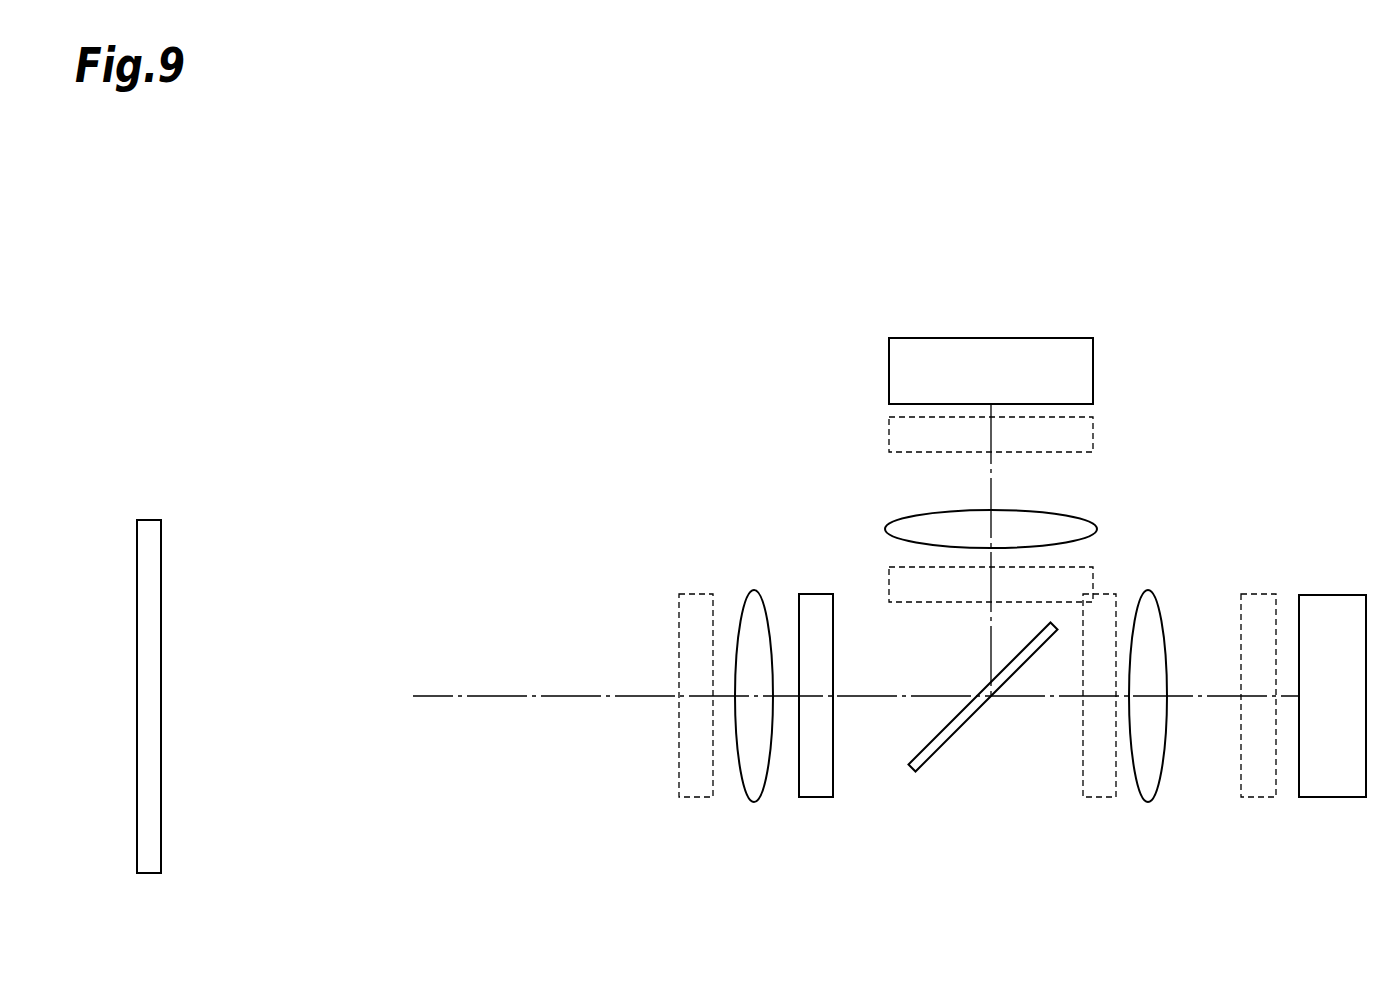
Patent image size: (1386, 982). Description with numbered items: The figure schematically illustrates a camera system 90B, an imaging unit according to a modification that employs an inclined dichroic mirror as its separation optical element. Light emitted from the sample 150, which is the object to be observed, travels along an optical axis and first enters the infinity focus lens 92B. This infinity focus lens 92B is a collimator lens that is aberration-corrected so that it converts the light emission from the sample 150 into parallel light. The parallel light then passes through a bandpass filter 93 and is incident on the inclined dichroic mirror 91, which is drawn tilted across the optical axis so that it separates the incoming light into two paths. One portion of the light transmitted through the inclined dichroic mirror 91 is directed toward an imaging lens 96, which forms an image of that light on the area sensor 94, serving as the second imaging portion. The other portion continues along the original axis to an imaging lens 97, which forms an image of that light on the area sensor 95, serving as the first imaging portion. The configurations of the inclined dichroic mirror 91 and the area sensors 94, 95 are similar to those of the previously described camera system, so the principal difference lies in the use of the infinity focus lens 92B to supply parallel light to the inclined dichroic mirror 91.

The sample 150 is at (150, 520).
The camera system 90B is at (723, 350).
The area sensor 94 is at (1066, 338).
The imaging lens 96 is at (1066, 513).
The infinity focus lens 92B is at (755, 590).
The bandpass filter 93 is at (814, 594).
The inclined dichroic mirror 91 is at (946, 746).
The imaging lens 97 is at (1148, 590).
The area sensor 95 is at (1332, 595).